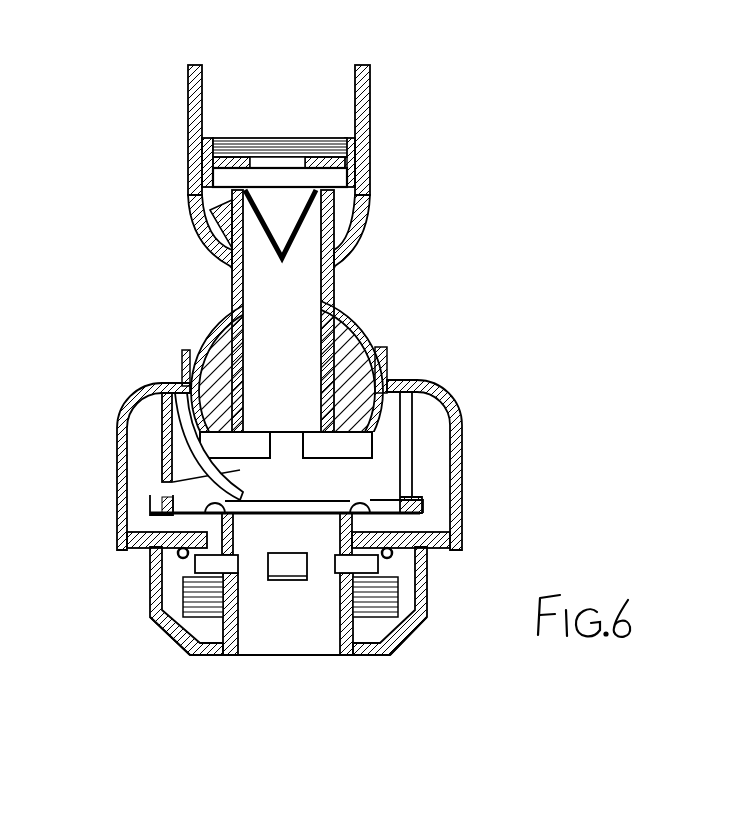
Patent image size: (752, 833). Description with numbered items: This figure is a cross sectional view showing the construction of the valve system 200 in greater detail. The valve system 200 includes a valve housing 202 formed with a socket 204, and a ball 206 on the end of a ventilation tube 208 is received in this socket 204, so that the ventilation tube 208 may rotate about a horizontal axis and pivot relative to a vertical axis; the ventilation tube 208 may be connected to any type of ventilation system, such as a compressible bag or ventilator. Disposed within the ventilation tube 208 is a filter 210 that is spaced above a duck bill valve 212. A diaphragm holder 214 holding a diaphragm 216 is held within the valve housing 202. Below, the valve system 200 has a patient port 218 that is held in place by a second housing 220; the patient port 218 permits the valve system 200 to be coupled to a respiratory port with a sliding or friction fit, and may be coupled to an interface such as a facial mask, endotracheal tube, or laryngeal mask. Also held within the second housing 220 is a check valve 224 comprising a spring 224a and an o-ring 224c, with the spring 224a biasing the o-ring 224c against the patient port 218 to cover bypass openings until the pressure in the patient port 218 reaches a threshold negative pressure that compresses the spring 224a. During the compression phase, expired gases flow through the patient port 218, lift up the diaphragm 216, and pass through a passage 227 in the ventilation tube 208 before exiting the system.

The valve system 200 is at (400, 172).
The valve housing 202 is at (460, 430).
The socket 204 is at (378, 454).
The ball 206 is at (345, 325).
The ventilation tube 208 is at (298, 287).
The filter 210 is at (245, 152).
The duck bill valve 212 is at (262, 235).
The diaphragm holder 214 is at (163, 447).
The diaphragm 216 is at (240, 498).
The patient port 218 is at (243, 627).
The second housing 220 is at (430, 588).
The check valve 224 is at (175, 580).
The spring 224a is at (187, 610).
The o-ring 224c is at (178, 555).
The passage 227 is at (228, 205).